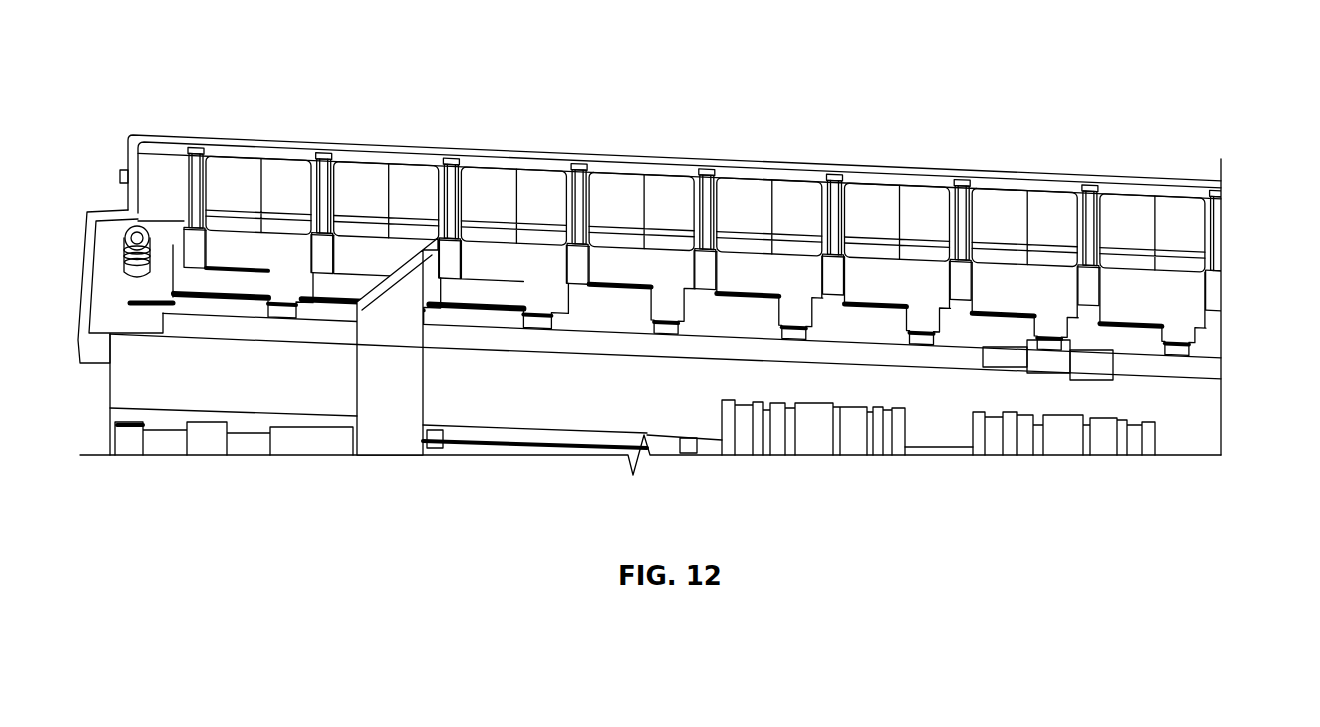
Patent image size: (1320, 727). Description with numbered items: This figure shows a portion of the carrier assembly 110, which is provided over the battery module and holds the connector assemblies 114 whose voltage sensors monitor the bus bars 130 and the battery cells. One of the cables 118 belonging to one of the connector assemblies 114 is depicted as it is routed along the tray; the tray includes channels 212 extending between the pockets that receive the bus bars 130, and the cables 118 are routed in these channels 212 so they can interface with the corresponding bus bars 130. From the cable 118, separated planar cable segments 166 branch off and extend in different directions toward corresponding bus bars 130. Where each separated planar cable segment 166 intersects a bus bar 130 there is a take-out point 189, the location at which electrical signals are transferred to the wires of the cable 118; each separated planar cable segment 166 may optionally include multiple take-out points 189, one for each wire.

The carrier assembly 110 is at (137, 81).
The connector assembly 114 is at (342, 409).
The cable 118 is at (407, 397).
The bus bar 130 is at (612, 183).
The separated planar cable segment 166 is at (220, 283).
The take-out point 189 is at (281, 290).
The channel 212 is at (207, 315).